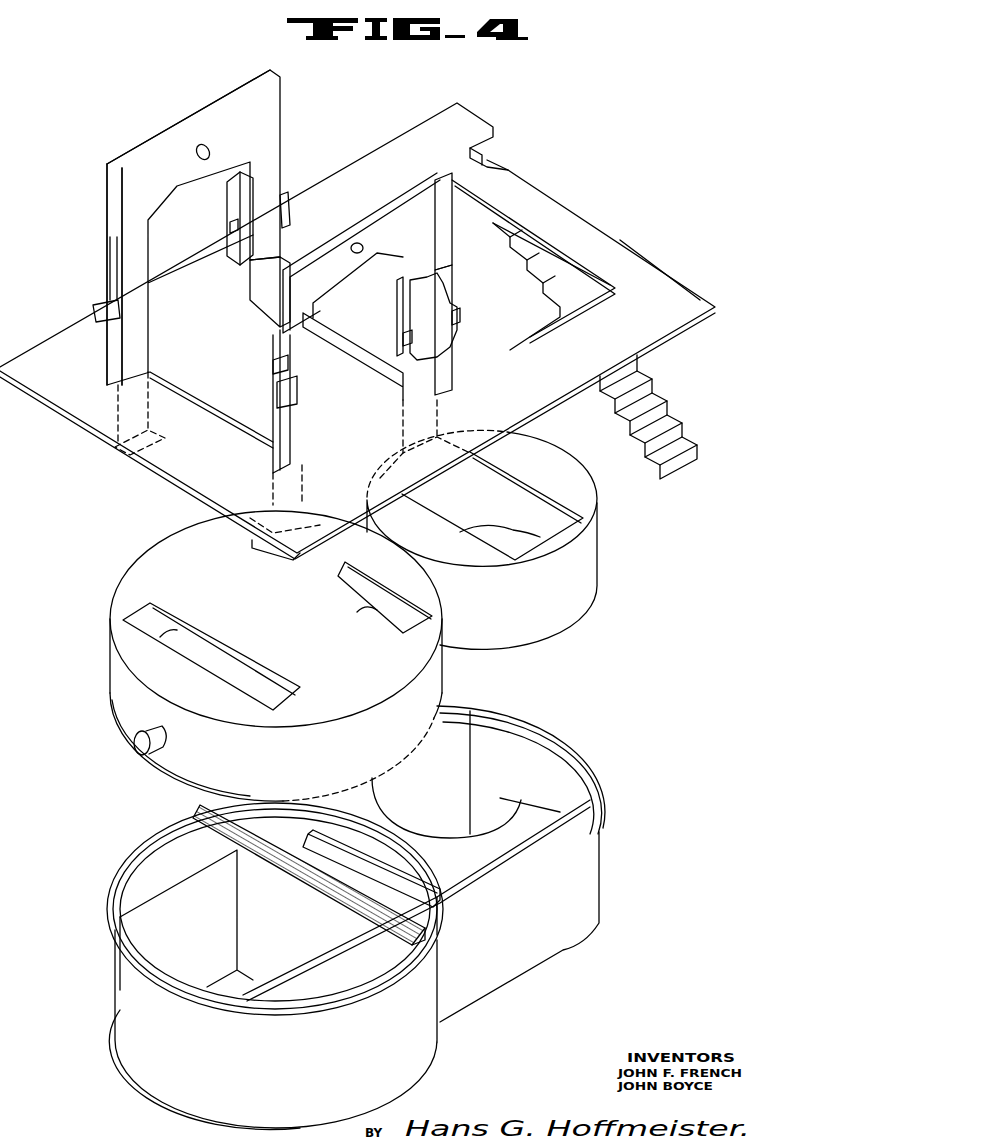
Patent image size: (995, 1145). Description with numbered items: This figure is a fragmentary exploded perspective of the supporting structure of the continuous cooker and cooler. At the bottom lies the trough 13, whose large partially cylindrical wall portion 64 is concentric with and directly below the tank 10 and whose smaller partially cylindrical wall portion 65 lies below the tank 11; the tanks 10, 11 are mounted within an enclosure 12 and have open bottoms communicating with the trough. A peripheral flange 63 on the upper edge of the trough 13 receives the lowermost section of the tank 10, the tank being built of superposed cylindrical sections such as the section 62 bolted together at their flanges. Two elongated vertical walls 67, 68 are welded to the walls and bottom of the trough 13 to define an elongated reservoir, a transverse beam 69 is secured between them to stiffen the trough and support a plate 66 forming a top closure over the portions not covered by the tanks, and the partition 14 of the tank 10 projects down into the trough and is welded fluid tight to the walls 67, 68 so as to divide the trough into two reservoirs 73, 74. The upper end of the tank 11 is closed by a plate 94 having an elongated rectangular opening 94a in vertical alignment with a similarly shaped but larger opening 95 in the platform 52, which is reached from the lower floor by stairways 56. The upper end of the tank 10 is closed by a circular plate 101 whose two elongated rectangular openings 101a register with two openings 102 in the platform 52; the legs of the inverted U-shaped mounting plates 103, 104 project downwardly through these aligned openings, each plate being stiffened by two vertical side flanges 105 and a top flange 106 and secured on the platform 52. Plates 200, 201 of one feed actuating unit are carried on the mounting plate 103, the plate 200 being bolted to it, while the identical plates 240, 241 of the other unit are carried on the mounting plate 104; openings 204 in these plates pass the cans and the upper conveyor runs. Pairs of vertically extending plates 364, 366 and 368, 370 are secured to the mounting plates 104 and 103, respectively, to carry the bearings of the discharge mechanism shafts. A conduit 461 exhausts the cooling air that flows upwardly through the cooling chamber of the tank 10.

The cylindrical tank 10 is at (108, 678).
The cylindrical tank 11 is at (595, 542).
The enclosure 12 is at (615, 241).
The trough 13 is at (599, 890).
The partition 14 is at (197, 807).
The platform 52 is at (654, 285).
The stairway 56 is at (648, 391).
The cylindrical section 62 is at (195, 748).
The peripheral flange 63 is at (152, 981).
The partially cylindrical wall portion 64 is at (204, 1070).
The partially cylindrical wall portion 65 is at (462, 916).
The plate 66 is at (455, 789).
The vertical partition wall 67 is at (320, 881).
The vertical partition wall 68 is at (628, 801).
The transverse beam 69 is at (371, 867).
The reservoir 73 is at (172, 957).
The reservoir 74 is at (517, 797).
The plate 94 is at (492, 504).
The rectangular opening 94a is at (437, 527).
The opening 95 is at (512, 352).
The circular plate 101 is at (340, 597).
The rectangular opening 101a is at (257, 673).
The opening 102 is at (212, 446).
The mounting plate 103 is at (361, 286).
The mounting plate 104 is at (193, 259).
The side flange 105 is at (108, 212).
The top flange 106 is at (210, 108).
The plate 200 is at (398, 290).
The plate 201 is at (412, 306).
The opening 204 is at (410, 340).
The plate 240 is at (238, 223).
The plate 241 is at (232, 206).
The vertically extending plate 364 is at (108, 258).
The vertically extending plate 366 is at (108, 300).
The vertically extending plate 368 is at (275, 372).
The vertically extending plate 370 is at (280, 390).
The conduit 461 is at (132, 740).